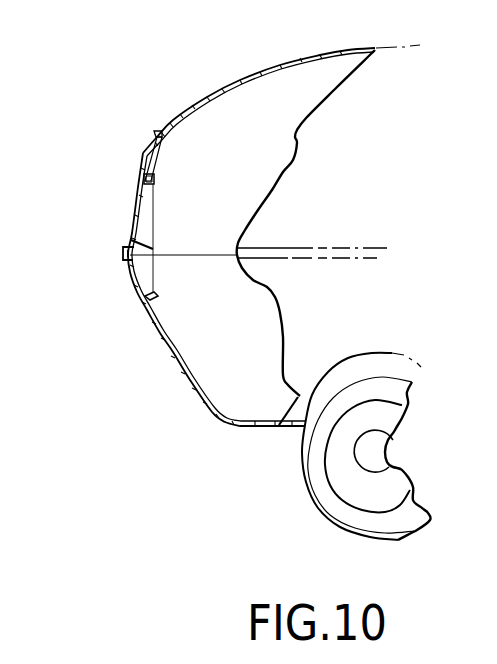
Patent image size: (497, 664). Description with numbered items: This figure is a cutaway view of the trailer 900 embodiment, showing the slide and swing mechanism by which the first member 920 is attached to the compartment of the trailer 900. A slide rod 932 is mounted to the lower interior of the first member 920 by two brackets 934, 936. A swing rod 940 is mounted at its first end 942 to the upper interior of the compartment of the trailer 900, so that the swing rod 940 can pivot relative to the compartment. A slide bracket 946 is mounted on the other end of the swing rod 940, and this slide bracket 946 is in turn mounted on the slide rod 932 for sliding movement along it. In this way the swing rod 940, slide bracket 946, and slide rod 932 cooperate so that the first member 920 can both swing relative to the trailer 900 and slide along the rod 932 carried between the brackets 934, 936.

The trailer 900 is at (173, 367).
The first member 920 is at (207, 115).
The slide rod 932 is at (141, 157).
The bracket 934 is at (143, 180).
The bracket 936 is at (161, 135).
The swing rod 940 is at (131, 248).
The first end 942 is at (151, 298).
The slide bracket 946 is at (155, 180).